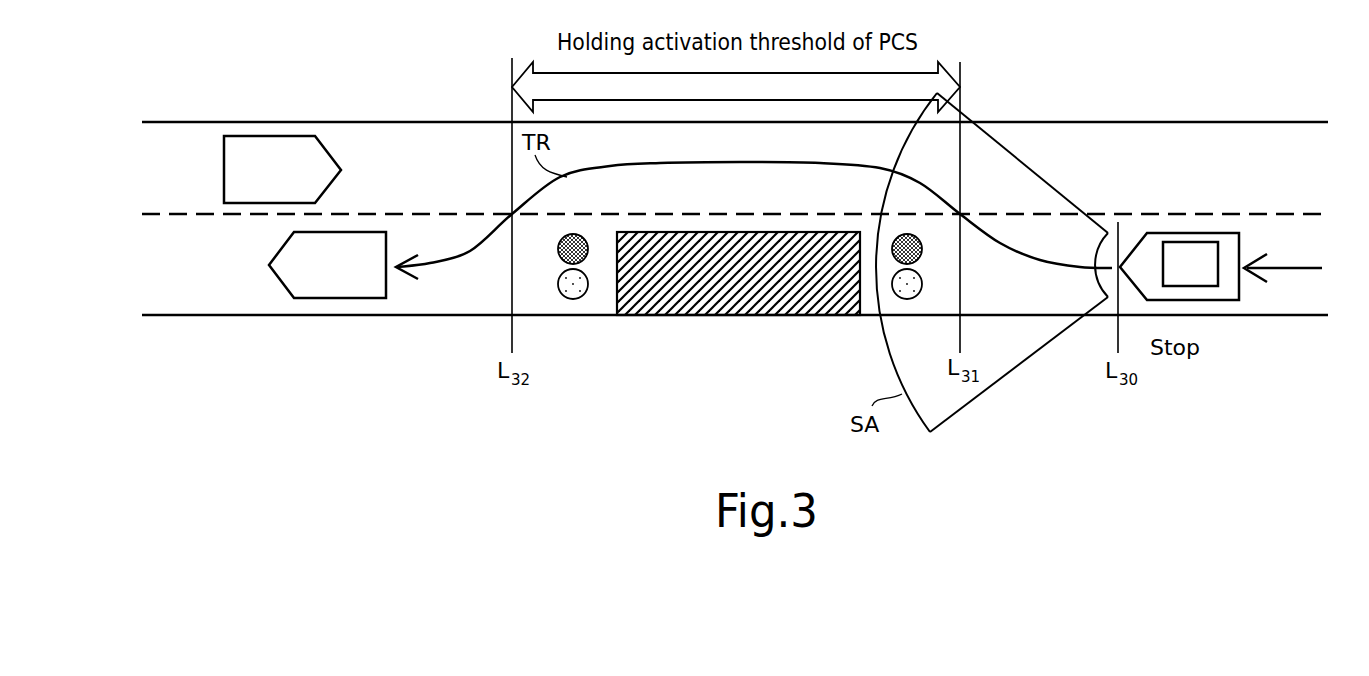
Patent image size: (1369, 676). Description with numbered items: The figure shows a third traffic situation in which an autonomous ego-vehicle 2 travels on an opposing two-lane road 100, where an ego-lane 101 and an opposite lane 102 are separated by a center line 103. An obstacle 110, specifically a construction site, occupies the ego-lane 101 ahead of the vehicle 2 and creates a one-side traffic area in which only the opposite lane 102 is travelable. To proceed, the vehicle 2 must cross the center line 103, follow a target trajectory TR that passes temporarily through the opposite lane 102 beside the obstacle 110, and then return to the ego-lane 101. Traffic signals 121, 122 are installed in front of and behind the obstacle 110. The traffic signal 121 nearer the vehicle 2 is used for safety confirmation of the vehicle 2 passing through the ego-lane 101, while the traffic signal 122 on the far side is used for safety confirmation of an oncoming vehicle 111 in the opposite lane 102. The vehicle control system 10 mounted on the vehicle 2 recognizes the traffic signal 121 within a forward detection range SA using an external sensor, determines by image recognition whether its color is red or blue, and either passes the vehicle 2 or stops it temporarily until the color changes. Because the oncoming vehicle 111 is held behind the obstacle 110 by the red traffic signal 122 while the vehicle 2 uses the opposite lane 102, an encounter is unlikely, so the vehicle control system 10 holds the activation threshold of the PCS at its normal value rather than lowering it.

The vehicle 2 is at (358, 232).
The vehicle control system 10 is at (1183, 242).
The opposing two-lane road 100 is at (401, 122).
The ego-lane 101 is at (182, 282).
The opposite lane 102 is at (182, 182).
The center line 103 is at (426, 214).
The obstacle 110 is at (718, 232).
The oncoming vehicle 111 is at (266, 136).
The traffic signal 121 is at (916, 307).
The traffic signal 122 is at (575, 307).